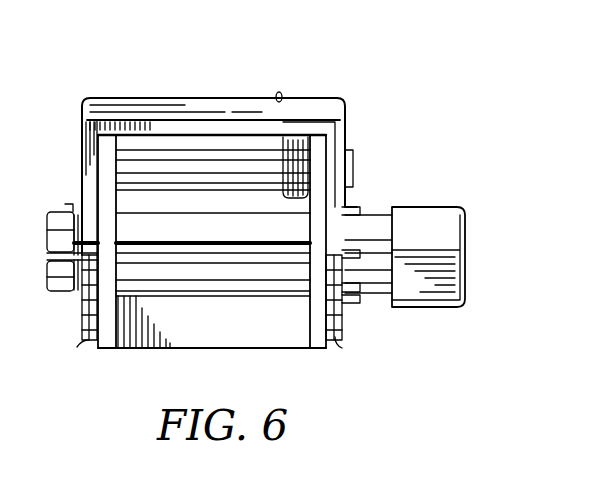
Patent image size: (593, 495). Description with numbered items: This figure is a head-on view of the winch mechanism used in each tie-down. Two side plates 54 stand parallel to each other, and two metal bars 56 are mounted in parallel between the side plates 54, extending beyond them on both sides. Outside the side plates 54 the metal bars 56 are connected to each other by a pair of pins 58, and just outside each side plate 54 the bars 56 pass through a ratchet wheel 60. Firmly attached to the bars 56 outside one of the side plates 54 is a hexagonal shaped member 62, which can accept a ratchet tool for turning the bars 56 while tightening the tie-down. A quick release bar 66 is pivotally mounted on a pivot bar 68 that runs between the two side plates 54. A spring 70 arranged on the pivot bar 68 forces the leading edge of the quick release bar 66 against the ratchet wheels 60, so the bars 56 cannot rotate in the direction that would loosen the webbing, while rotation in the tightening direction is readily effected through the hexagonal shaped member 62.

The side plates 54 is at (103, 349).
The metal bars 56 is at (170, 283).
The pins 58 is at (68, 300).
The ratchet wheel 60 is at (82, 340).
The hexagonal shaped member 62 is at (428, 213).
The quick release bar 66 is at (128, 97).
The pivot bar 68 is at (192, 152).
The spring 70 is at (288, 150).